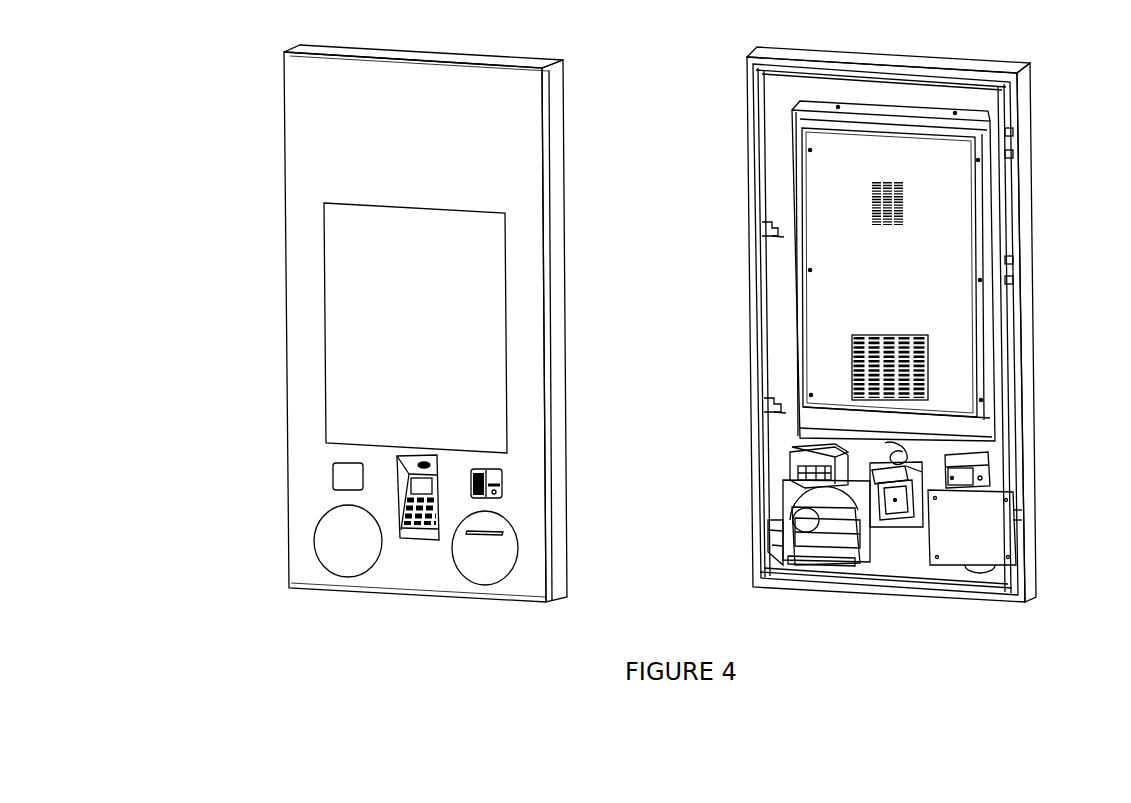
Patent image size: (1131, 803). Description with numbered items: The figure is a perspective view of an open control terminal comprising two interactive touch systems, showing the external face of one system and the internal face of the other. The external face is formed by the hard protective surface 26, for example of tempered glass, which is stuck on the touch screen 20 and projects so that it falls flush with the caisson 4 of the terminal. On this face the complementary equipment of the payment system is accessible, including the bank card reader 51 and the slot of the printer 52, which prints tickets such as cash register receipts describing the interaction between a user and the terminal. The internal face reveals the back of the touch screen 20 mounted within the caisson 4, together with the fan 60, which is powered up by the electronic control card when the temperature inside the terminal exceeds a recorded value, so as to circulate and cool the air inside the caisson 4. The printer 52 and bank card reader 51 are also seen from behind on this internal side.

The hard protective surface 26 is at (325, 103).
The caisson 4 is at (335, 232).
The bank card reader 51 is at (797, 462).
The printer 52 is at (770, 542).
The touch screen 20 is at (843, 222).
The fan 60 is at (913, 343).